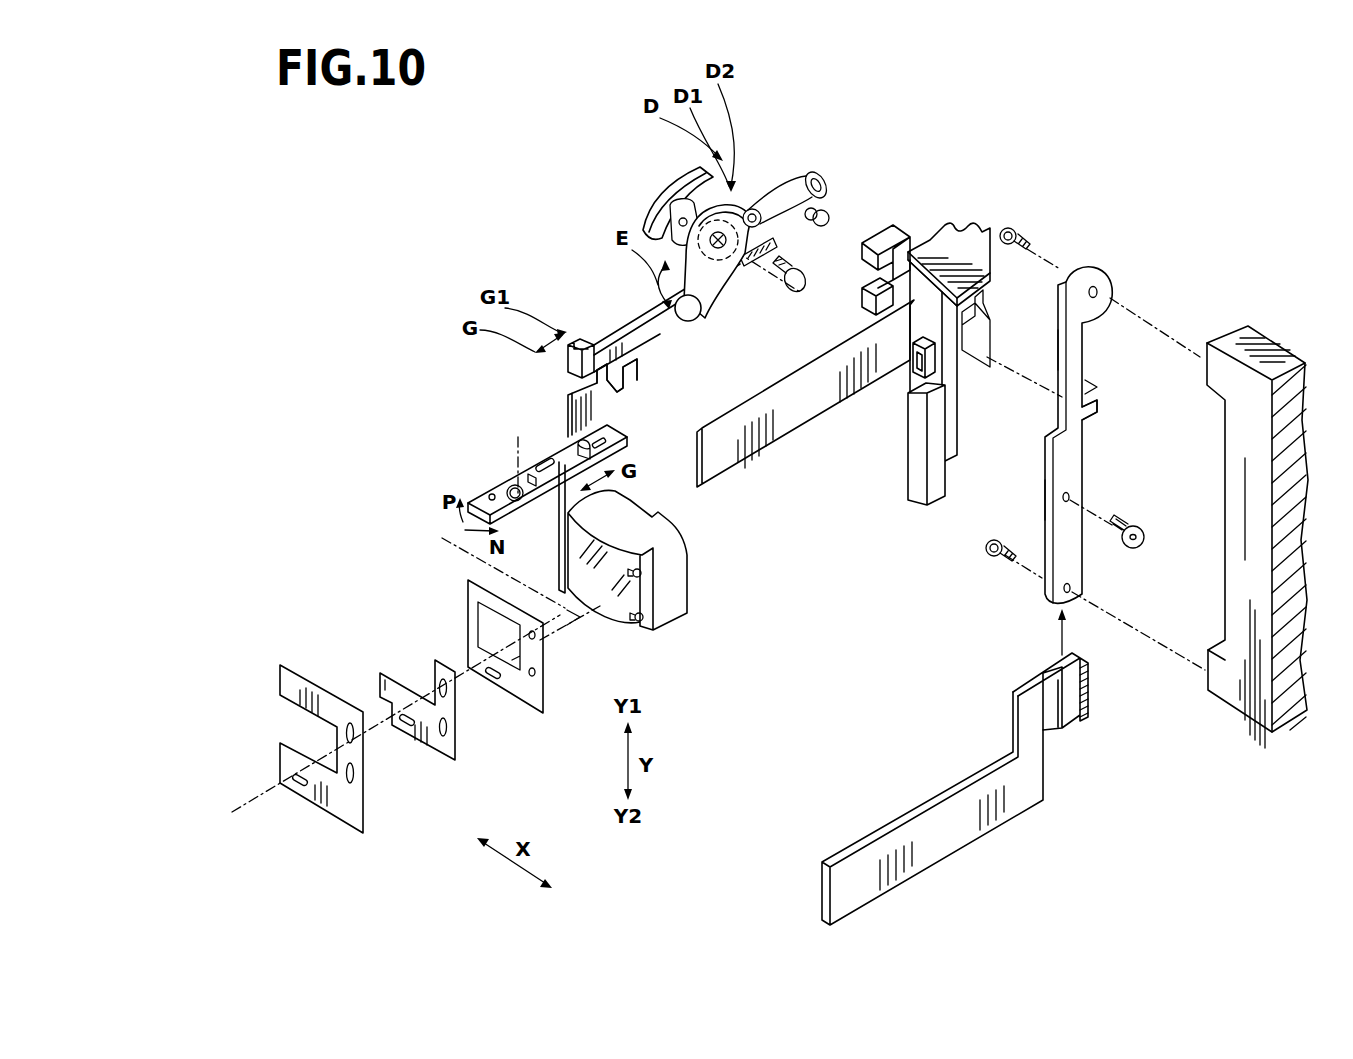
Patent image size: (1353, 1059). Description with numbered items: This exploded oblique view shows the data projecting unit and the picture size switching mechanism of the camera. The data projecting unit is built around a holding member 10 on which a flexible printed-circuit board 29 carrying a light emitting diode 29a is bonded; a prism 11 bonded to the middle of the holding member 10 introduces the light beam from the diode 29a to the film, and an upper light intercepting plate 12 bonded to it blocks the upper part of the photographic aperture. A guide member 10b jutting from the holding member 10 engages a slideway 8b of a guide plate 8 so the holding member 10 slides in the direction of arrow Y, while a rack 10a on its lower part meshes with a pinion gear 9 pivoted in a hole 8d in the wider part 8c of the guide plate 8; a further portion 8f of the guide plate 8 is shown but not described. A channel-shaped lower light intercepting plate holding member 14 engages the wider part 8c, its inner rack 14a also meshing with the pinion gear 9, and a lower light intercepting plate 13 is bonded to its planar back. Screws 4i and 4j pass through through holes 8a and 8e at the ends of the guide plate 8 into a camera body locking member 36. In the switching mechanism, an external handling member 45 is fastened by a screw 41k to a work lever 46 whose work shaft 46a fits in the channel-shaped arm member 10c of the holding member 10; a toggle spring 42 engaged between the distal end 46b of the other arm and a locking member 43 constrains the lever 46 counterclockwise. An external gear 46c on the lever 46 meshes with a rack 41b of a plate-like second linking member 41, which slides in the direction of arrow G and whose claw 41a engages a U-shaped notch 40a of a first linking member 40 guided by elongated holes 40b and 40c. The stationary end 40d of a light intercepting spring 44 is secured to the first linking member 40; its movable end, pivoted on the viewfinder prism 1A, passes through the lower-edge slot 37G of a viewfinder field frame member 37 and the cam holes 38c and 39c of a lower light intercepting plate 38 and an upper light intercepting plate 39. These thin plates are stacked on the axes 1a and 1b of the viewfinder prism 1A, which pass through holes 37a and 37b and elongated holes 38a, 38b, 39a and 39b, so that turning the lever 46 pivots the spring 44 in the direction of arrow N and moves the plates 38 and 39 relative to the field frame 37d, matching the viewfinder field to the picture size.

The viewfinder prism 1A is at (622, 517).
The axis 1a is at (647, 577).
The axis 1b is at (643, 627).
The screw 4i is at (1012, 231).
The screw 4j is at (990, 556).
The guide plate 8 is at (1082, 452).
The through hole 8a is at (1097, 291).
The slideway 8b is at (1057, 348).
The wider part 8c is at (1045, 500).
The hole 8d is at (1069, 496).
The through hole 8e is at (1072, 587).
The projection 8f is at (1097, 408).
The pinion gear 9 is at (1143, 534).
The holding member 10 is at (950, 323).
The rack 10a is at (947, 462).
The guide member 10b is at (975, 328).
The arm member 10c is at (872, 243).
The prism 11 is at (920, 363).
The upper light intercepting plate 12 is at (787, 440).
The lower light intercepting plate 13 is at (873, 830).
The lower light intercepting plate holding member 14 is at (1070, 706).
The rack 14a is at (1085, 722).
The flexible printed-circuit board 29 is at (925, 245).
The light emitting diode 29a is at (906, 298).
The camera body locking member 36 is at (1250, 332).
The viewfinder field frame member 37 is at (511, 673).
The hole 37a is at (535, 638).
The hole 37b is at (535, 674).
The field frame 37d is at (485, 618).
The slot 37G is at (492, 679).
The lower light intercepting plate 38 is at (453, 722).
The elongated hole 38a is at (440, 686).
The elongated hole 38b is at (446, 728).
The cam hole 38c is at (408, 728).
The upper light intercepting plate 39 is at (349, 757).
The elongated hole 39a is at (349, 722).
The elongated hole 39b is at (353, 780).
The cam hole 39c is at (297, 790).
The first linking member 40 is at (550, 471).
The notch 40a is at (637, 375).
The elongated hole 40b is at (548, 457).
The elongated hole 40c is at (592, 447).
The stationary end 40d is at (498, 508).
The second linking member 41 is at (681, 308).
The claw 41a is at (578, 344).
The rack 41b is at (780, 266).
The screw 41k is at (788, 290).
The toggle spring 42 is at (823, 176).
The locking member 43 is at (829, 217).
The light intercepting spring 44 is at (505, 523).
The external handling member 45 is at (648, 200).
The work lever 46 is at (690, 231).
The work shaft 46a is at (699, 318).
The distal end 46b is at (755, 210).
The external gear 46c is at (680, 218).